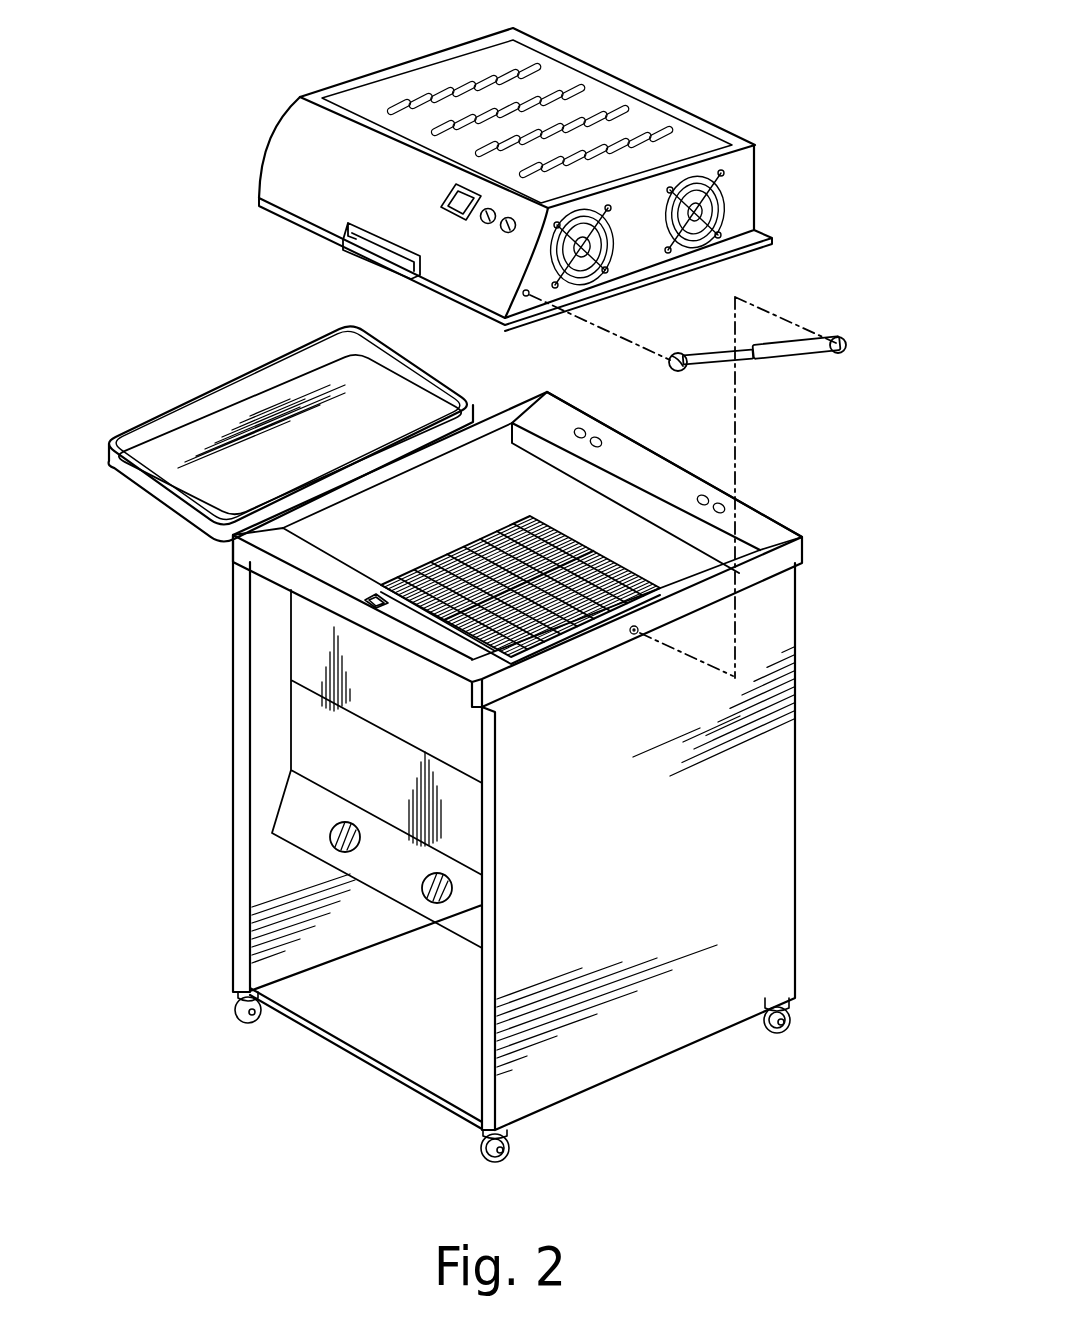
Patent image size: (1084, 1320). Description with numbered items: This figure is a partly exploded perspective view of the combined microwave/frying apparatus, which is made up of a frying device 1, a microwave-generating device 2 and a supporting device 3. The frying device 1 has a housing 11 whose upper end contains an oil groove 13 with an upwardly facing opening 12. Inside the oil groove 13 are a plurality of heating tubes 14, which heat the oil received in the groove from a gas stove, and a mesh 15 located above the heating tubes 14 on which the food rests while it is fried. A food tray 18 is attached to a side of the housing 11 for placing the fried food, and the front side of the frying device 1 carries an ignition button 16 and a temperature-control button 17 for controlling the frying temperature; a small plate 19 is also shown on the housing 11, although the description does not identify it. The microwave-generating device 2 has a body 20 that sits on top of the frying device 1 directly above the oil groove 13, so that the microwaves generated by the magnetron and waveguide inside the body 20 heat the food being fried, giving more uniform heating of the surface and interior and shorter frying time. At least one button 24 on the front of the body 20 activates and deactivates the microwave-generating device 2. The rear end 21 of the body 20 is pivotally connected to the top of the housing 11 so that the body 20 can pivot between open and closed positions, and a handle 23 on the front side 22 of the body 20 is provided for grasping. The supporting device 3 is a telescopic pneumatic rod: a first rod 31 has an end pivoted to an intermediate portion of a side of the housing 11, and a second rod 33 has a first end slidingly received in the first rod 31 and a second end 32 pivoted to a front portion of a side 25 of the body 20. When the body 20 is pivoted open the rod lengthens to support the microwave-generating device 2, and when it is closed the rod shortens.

The frying device 1 is at (330, 1081).
The microwave-generating device 2 is at (662, 62).
The supporting device 3 is at (848, 372).
The housing 11 is at (775, 893).
The upwardly facing opening 12 is at (620, 482).
The oil groove 13 is at (625, 537).
The heating tubes 14 is at (528, 548).
The mesh 15 is at (605, 561).
The ignition button 16 is at (330, 840).
The temperature-control button 17 is at (421, 893).
The food tray 18 is at (153, 502).
The name plate 19 is at (360, 604).
The body 20 is at (297, 125).
The rear end 21 is at (772, 237).
The front side 22 is at (290, 180).
The handle 23 is at (340, 250).
The button 24 is at (505, 232).
The side 25 is at (743, 177).
The first rod 31 is at (846, 343).
The second end 32 is at (672, 358).
The second rod 33 is at (720, 361).